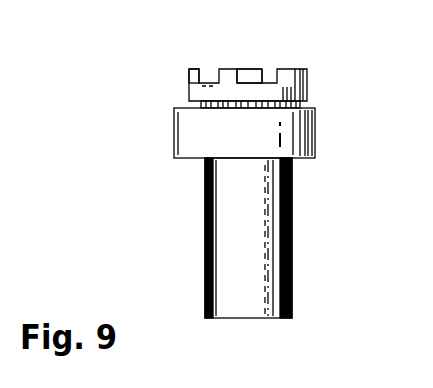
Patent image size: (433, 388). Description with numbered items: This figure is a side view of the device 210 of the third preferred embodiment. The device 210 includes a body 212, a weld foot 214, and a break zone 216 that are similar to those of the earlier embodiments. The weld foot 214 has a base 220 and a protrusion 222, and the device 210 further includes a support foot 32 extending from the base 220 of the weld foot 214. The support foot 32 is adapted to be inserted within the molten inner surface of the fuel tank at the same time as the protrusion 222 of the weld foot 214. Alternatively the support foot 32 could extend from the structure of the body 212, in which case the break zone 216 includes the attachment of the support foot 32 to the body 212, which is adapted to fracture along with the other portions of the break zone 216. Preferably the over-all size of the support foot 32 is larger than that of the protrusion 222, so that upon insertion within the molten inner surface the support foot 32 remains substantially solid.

The device 210 is at (178, 241).
The body 212 is at (262, 258).
The weld foot 214 is at (313, 74).
The break zone 216 is at (247, 104).
The base 220 is at (203, 90).
The protrusion 222 is at (197, 75).
The support foot 32 is at (247, 77).